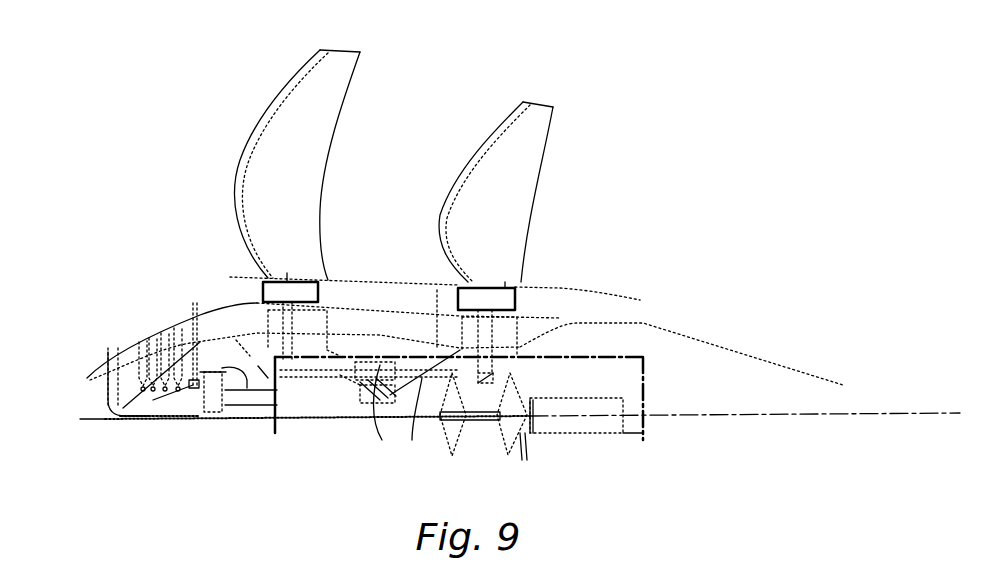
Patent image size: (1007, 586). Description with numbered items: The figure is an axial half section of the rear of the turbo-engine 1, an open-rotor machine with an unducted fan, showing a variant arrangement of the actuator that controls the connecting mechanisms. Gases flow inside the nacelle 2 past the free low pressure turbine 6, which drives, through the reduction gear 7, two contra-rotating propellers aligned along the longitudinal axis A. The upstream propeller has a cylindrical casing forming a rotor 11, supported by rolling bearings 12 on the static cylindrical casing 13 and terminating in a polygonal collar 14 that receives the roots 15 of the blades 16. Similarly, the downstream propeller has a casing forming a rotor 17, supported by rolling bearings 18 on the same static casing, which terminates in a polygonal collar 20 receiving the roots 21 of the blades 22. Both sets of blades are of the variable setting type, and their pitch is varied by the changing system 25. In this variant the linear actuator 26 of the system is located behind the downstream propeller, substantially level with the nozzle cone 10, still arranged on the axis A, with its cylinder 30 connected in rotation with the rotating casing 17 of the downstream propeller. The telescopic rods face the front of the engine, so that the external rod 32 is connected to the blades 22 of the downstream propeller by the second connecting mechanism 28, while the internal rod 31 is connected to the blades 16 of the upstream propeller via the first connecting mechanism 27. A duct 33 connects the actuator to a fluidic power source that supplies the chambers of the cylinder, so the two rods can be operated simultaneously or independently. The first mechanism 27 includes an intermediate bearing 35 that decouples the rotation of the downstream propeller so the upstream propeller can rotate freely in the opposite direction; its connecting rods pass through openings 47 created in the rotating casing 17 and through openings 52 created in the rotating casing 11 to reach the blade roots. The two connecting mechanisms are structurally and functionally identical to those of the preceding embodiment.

The unducted fan turbo-engine 1 is at (678, 259).
The nacelle 2 is at (603, 272).
The free low pressure turbine 6 is at (141, 340).
The reduction gear 7 is at (213, 429).
The nozzle cone 10 is at (698, 364).
The rotor casing of upstream propeller 11 is at (336, 353).
The rolling bearings 12 is at (258, 366).
The static cylindrical casing 13 is at (238, 352).
The polygonal collar 14 is at (266, 277).
The blade roots 15 is at (300, 290).
The blades 16 is at (268, 164).
The rotor casing of downstream propeller 17 is at (449, 351).
The rolling bearings 18 is at (380, 370).
The polygonal collar 20 is at (528, 295).
The blade roots 21 is at (505, 286).
The blades 22 is at (483, 201).
The pitch changing system 25 is at (652, 428).
The linear actuator 26 is at (634, 446).
The first connecting mechanism 27 is at (376, 352).
The second connecting mechanism 28 is at (512, 371).
The cylinder 30 is at (600, 434).
The internal piston rod 31 is at (479, 428).
The external piston rod 32 is at (524, 441).
The duct 33 is at (150, 420).
The intermediate bearing 35 is at (404, 363).
The openings 47 is at (421, 378).
The openings 52 is at (367, 367).
The longitudinal axis A is at (805, 413).